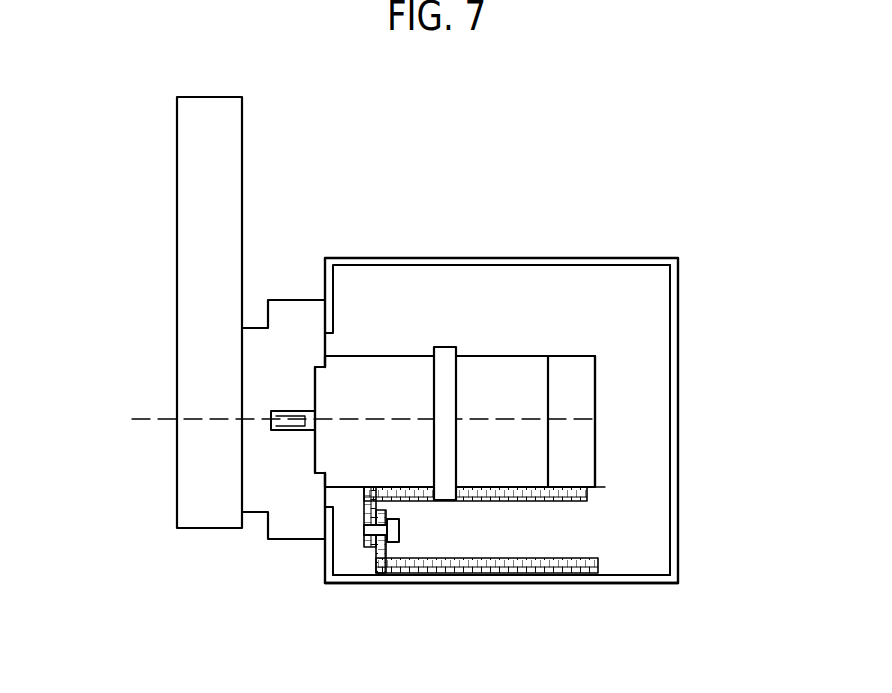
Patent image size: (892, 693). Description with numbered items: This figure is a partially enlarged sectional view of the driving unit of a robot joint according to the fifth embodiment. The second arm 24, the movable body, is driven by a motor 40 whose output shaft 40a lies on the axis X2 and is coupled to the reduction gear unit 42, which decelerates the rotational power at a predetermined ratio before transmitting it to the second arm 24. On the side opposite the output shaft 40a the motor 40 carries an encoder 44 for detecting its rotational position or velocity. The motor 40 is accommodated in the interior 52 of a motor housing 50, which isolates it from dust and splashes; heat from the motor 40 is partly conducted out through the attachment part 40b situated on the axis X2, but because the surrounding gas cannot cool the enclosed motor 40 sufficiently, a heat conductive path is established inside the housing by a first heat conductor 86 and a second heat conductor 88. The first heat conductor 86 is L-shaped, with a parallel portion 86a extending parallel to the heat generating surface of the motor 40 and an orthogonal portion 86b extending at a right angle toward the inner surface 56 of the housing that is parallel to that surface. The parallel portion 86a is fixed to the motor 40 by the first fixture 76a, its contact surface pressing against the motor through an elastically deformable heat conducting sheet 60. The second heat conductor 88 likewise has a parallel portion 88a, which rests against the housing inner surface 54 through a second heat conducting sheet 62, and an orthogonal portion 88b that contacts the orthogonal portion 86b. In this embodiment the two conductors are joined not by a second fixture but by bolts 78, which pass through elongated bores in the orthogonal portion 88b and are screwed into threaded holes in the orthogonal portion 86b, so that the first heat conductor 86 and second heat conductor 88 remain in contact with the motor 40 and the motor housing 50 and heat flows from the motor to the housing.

The second arm 24 is at (243, 140).
The reduction gear unit 42 is at (293, 298).
The motor housing 50 is at (392, 257).
The interior 52 is at (378, 304).
The inner surface 54 is at (670, 331).
The inner surface 56 is at (620, 576).
The heat conducting sheet 62 is at (614, 575).
The motor 40 is at (512, 355).
The output shaft 40a is at (292, 432).
The attachment part 40b is at (318, 464).
The encoder 44 is at (584, 354).
The first fixture 76a is at (447, 346).
The heat conducting sheet 60 is at (612, 486).
The first heat conductor 86 is at (536, 491).
The parallel portion 86a is at (512, 502).
The orthogonal portion 86b is at (366, 503).
The second heat conductor 88 is at (468, 586).
The parallel portion 88a is at (582, 557).
The orthogonal portion 88b is at (378, 550).
The bolts 78 is at (400, 532).
The axis X2 is at (144, 415).